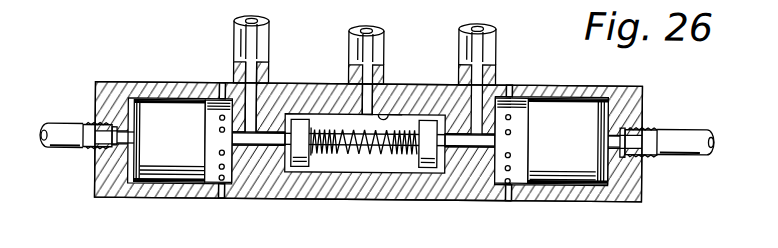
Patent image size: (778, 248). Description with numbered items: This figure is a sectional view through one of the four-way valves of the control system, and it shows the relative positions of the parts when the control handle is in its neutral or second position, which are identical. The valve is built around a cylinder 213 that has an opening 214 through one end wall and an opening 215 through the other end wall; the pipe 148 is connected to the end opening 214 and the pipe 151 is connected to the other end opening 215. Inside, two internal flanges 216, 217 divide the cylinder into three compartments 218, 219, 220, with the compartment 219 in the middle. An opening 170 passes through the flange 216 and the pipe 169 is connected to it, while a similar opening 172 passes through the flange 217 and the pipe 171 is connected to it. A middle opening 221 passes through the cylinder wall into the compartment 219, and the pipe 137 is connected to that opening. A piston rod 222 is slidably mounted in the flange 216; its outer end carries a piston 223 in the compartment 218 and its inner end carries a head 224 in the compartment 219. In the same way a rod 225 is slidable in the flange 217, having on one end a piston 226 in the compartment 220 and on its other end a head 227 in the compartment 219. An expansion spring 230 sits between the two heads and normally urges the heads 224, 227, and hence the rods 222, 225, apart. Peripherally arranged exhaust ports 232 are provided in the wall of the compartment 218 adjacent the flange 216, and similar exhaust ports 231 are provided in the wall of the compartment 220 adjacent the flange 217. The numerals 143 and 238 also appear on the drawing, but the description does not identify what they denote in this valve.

The pipe 137 is at (380, 43).
The valve assembly 143 is at (360, 190).
The pipe 148 is at (58, 124).
The pipe 151 is at (695, 127).
The pipe 169 is at (267, 38).
The opening 170 is at (268, 72).
The pipe 171 is at (496, 44).
The opening 172 is at (508, 85).
The cylinder 213 is at (610, 201).
The opening 214 is at (95, 156).
The opening 215 is at (637, 153).
The internal flange 216 is at (250, 186).
The internal flange 217 is at (428, 168).
The compartment 218 is at (133, 100).
The compartment 219 is at (391, 112).
The compartment 220 is at (604, 172).
The middle opening 221 is at (379, 112).
The piston rod 222 is at (248, 175).
The piston 223 is at (157, 158).
The head 224 is at (303, 168).
The rod 225 is at (470, 149).
The piston 226 is at (597, 67).
The head 227 is at (418, 160).
The expansion spring 230 is at (337, 130).
The exhaust ports 231 is at (511, 131).
The exhaust ports 232 is at (222, 84).
The perforated plate 238 is at (212, 119).